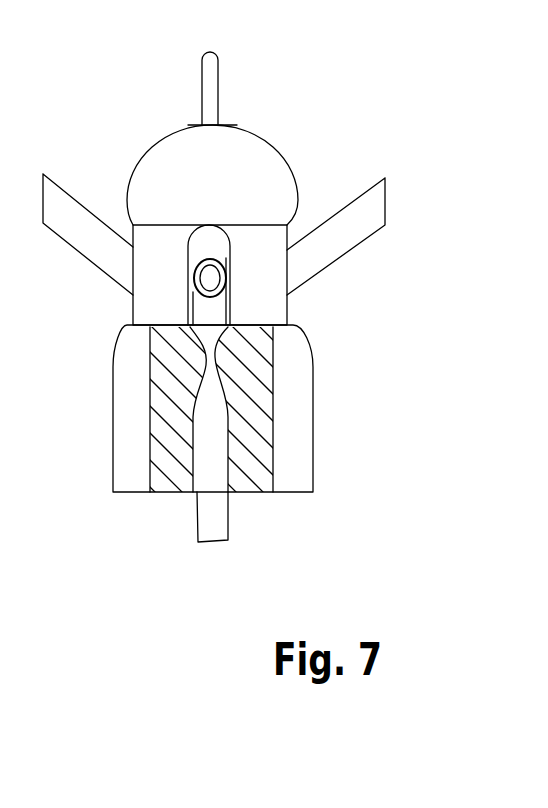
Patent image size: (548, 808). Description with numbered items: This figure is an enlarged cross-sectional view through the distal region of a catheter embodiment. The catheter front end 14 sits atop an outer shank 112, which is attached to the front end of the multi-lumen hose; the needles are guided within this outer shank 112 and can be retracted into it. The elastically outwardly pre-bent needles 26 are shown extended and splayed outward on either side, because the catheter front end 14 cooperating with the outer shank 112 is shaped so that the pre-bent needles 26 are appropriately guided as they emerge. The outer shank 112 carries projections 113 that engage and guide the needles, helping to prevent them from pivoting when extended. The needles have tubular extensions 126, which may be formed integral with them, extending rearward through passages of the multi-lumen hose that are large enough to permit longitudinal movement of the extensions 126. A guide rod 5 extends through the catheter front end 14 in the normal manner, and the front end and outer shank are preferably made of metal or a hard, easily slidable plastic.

The guide rod 5 is at (210, 87).
The catheter front end 14 is at (238, 163).
The elastically outwardly pre-bent needles 26 is at (72, 217).
The projections 113 is at (218, 368).
The outer shank 112 is at (293, 443).
The tubular extensions 126 is at (207, 530).